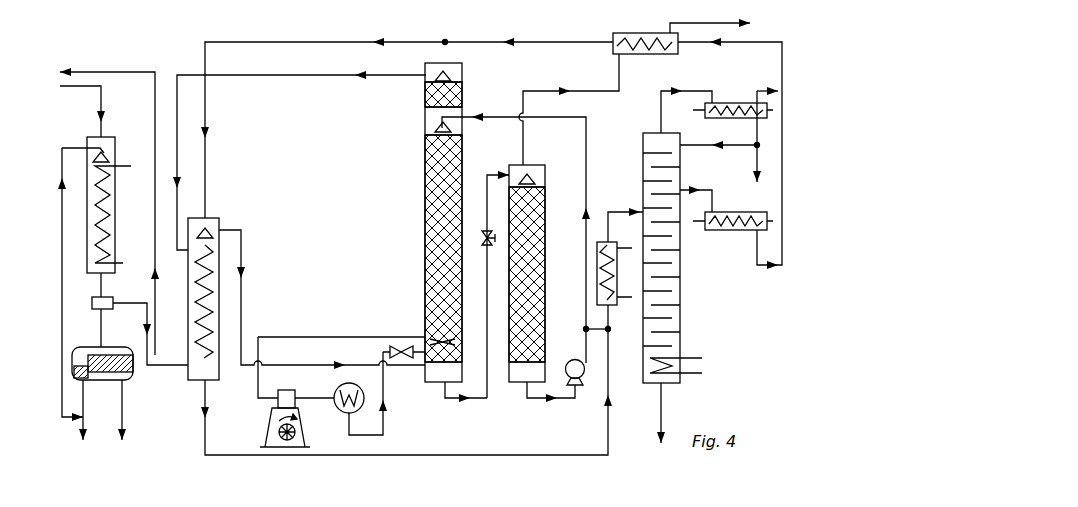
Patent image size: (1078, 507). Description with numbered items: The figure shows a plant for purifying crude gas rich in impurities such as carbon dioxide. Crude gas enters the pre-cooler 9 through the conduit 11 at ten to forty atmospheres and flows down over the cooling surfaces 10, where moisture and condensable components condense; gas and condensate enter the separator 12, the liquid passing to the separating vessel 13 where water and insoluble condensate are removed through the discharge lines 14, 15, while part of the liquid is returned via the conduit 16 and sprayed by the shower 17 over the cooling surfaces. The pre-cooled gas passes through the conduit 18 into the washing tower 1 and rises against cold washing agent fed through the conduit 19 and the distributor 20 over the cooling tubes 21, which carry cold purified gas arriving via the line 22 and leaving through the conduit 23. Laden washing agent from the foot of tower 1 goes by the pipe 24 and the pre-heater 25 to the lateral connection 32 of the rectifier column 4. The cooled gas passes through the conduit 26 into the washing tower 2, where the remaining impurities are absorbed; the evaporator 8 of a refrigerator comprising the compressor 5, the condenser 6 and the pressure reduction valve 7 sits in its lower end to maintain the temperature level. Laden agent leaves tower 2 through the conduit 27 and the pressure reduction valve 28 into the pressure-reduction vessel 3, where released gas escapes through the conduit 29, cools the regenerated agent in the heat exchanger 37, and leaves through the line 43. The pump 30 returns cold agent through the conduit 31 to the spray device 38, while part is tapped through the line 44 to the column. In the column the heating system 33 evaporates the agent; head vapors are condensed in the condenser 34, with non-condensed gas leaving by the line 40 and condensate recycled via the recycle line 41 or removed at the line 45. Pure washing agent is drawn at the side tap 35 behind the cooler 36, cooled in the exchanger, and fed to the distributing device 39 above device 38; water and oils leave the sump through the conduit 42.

The washing tower 1 is at (188, 333).
The washing tower 2 is at (457, 184).
The pressure-reduction vessel 3 is at (545, 265).
The rectifier column 4 is at (682, 305).
The compressor 5 is at (305, 436).
The condenser 6 is at (335, 392).
The pressure reduction valve 7 is at (389, 350).
The evaporator 8 is at (456, 343).
The pre-cooler 9 is at (116, 233).
The cooling surfaces 10 is at (111, 192).
The conduit 11 is at (73, 92).
The separator 12 is at (113, 297).
The separating vessel 13 is at (131, 383).
The discharge line 14 is at (127, 419).
The discharge line 15 is at (87, 420).
The conduit 16 is at (63, 307).
The shower 17 is at (110, 148).
The conduit 18 is at (152, 367).
The conduit 19 is at (319, 42).
The distributor 20 is at (214, 224).
The cooling tubes 21 is at (197, 300).
The line 22 is at (300, 77).
The conduit 23 is at (86, 76).
The pipe 24 is at (392, 460).
The pre-heater 25 is at (616, 290).
The conduit 26 is at (243, 258).
The conduit 27 is at (474, 398).
The pressure reduction valve 28 is at (484, 250).
The conduit 29 is at (525, 144).
The pump 30 is at (578, 388).
The conduit 31 is at (503, 117).
The lateral connection 32 is at (626, 211).
The heating system 33 is at (693, 366).
The condenser 34 is at (736, 118).
The side tap 35 is at (700, 190).
The cooler 36 is at (724, 232).
The heat exchanger 37 is at (648, 33).
The spray device 38 is at (458, 129).
The distributing device 39 is at (462, 72).
The line 40 is at (760, 90).
The recycle line 41 is at (690, 150).
The conduit 42 is at (660, 425).
The line 43 is at (689, 23).
The line 44 is at (592, 332).
The line 45 is at (757, 173).